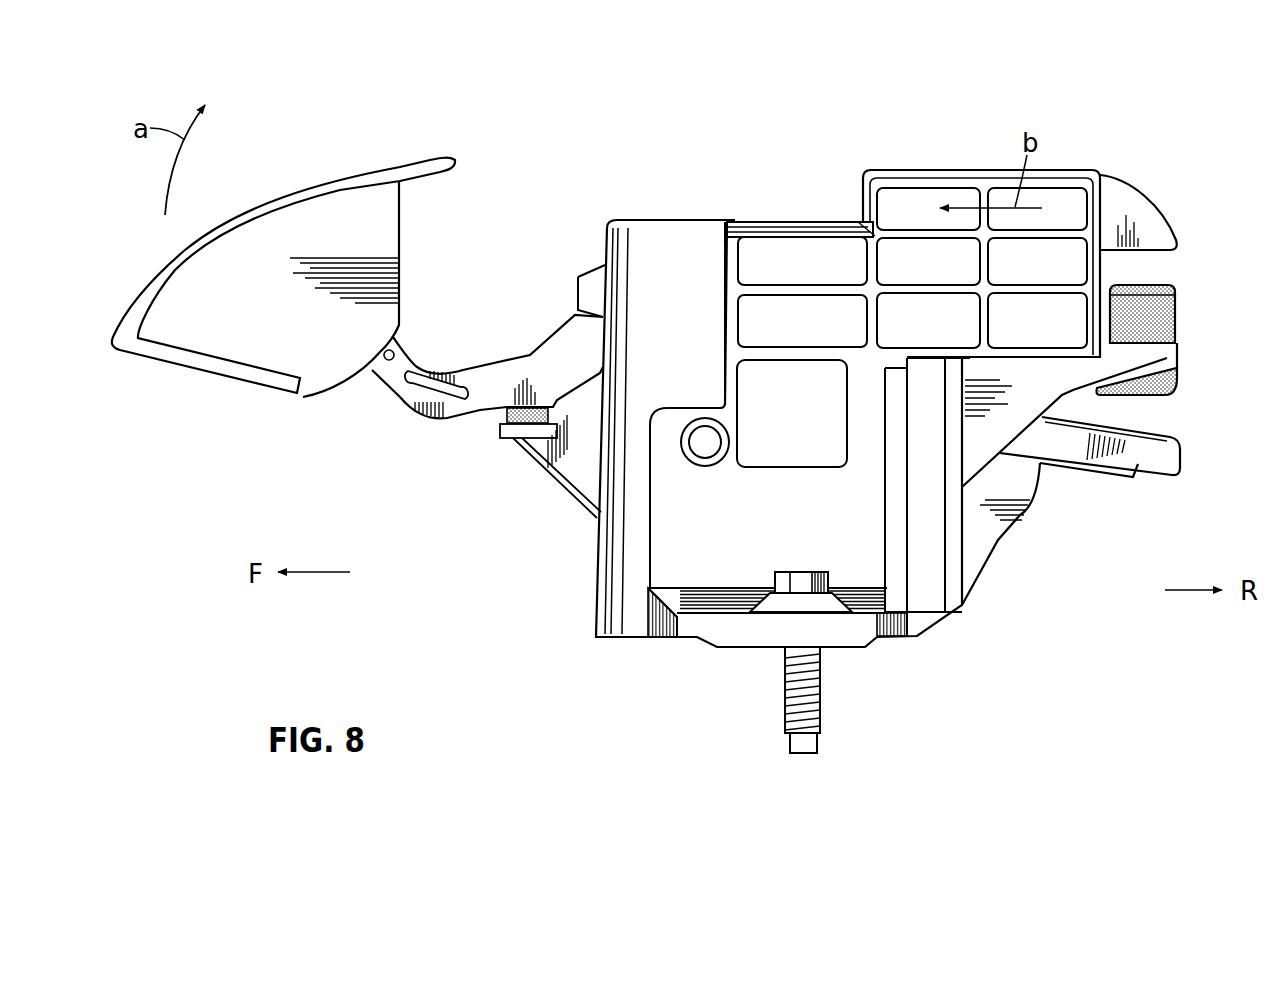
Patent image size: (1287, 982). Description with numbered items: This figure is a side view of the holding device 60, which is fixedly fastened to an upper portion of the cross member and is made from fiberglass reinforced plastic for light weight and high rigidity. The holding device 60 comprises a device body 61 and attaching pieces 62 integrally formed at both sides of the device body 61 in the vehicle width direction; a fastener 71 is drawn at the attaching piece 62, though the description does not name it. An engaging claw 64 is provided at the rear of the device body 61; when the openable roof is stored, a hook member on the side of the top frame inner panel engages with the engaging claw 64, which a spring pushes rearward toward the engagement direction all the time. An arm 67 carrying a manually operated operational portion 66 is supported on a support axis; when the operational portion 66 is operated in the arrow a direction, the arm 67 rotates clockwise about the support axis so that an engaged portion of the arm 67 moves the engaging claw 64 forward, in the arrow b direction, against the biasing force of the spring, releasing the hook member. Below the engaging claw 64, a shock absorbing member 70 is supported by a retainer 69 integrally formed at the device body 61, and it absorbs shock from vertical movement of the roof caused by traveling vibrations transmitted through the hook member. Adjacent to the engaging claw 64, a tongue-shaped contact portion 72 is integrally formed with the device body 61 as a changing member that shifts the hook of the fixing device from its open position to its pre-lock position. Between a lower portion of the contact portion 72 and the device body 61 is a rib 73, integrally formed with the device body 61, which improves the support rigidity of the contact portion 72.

The holding device 60 is at (680, 132).
The device body 61 is at (766, 222).
The attaching pieces 62 is at (718, 625).
The engaging claw 64 is at (1150, 201).
The operational portion 66 is at (272, 190).
The arm 67 is at (495, 362).
The retainer 69 is at (1165, 352).
The shock absorbing member 70 is at (1170, 315).
The nut 71 is at (805, 575).
The contact portion 72 is at (1147, 428).
The rib 73 is at (1025, 490).